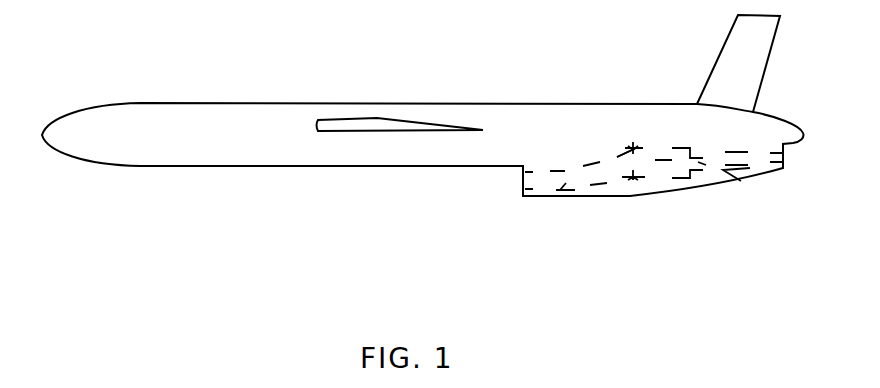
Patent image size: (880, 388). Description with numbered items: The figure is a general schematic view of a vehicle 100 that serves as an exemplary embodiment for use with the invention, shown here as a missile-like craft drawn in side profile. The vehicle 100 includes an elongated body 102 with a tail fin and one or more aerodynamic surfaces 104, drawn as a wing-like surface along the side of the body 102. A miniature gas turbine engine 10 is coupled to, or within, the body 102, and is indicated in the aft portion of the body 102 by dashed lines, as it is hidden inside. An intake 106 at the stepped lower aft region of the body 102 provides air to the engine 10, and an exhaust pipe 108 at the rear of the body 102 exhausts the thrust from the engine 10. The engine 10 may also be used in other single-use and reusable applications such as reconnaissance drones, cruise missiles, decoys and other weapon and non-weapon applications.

The vehicle 100 is at (422, 145).
The body 102 is at (210, 103).
The aerodynamic surface 104 is at (353, 132).
The intake 106 is at (550, 205).
The exhaust pipe 108 is at (747, 195).
The miniature gas turbine engine 10 is at (656, 156).